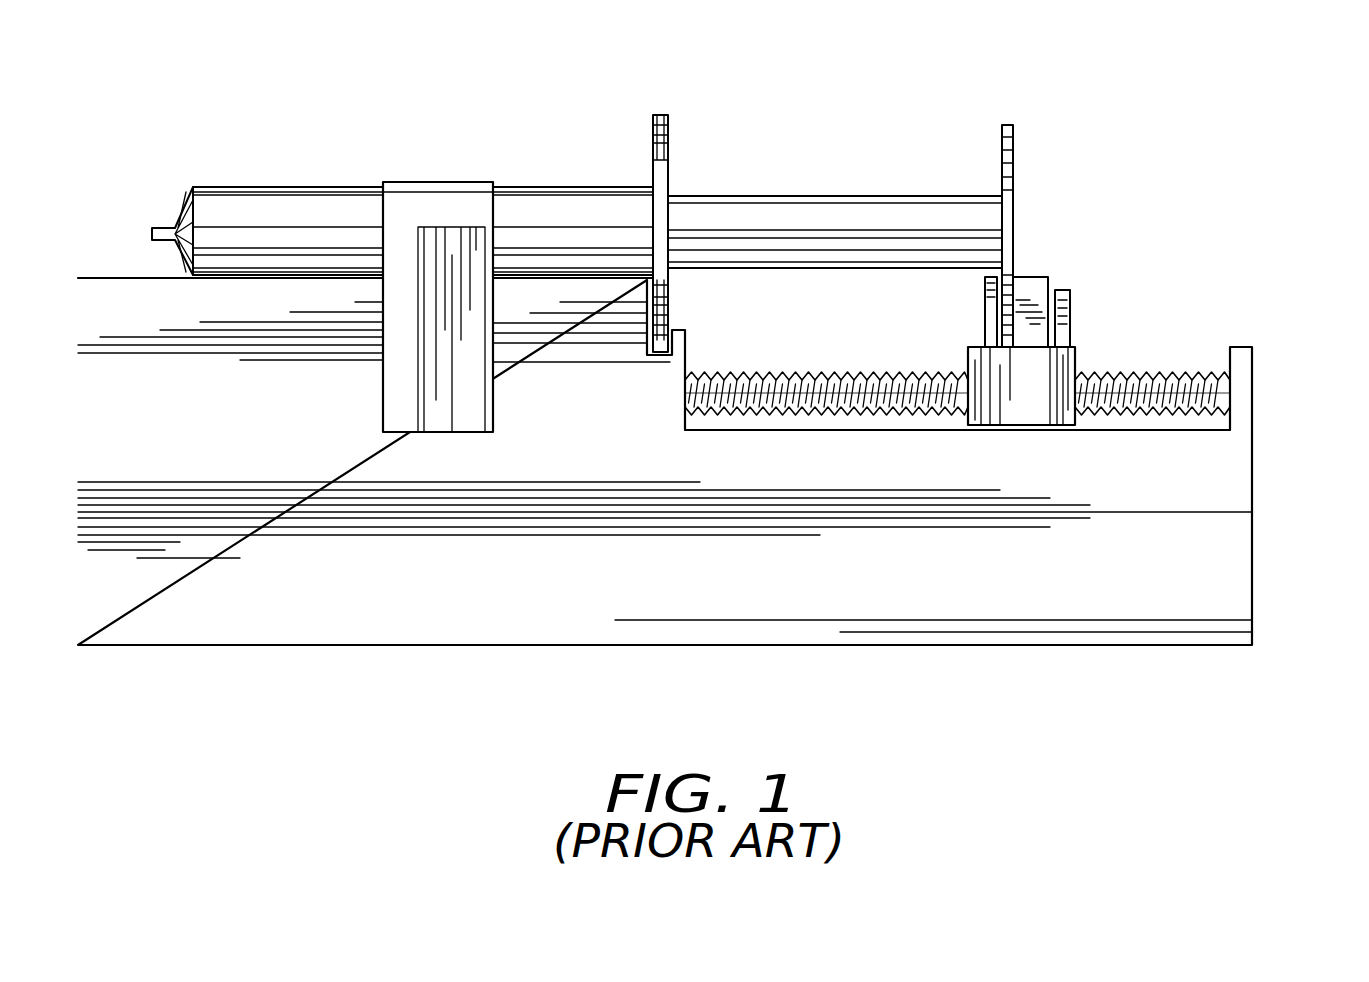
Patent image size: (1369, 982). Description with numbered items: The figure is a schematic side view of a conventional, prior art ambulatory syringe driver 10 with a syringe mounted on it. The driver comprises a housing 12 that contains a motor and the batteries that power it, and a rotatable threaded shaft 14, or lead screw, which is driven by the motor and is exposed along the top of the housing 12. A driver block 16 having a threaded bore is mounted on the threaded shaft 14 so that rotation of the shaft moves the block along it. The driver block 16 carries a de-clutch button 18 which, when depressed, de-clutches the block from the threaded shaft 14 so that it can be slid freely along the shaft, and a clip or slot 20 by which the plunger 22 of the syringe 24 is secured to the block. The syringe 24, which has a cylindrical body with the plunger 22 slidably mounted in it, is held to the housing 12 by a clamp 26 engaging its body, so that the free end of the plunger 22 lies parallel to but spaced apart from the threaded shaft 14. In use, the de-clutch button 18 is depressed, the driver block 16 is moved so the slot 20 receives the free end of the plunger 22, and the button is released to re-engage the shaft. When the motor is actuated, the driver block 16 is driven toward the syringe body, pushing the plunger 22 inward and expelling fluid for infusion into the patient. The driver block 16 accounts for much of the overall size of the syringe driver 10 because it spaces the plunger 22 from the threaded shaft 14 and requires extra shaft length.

The ambulatory syringe driver 10 is at (1188, 156).
The housing 12 is at (1193, 476).
The threaded shaft 14 is at (1190, 377).
The driver block 16 is at (1077, 358).
The de-clutch button 18 is at (1071, 300).
The clip or slot 20 is at (1019, 277).
The plunger 22 is at (1004, 124).
The syringe 24 is at (581, 187).
The clamp 26 is at (426, 182).